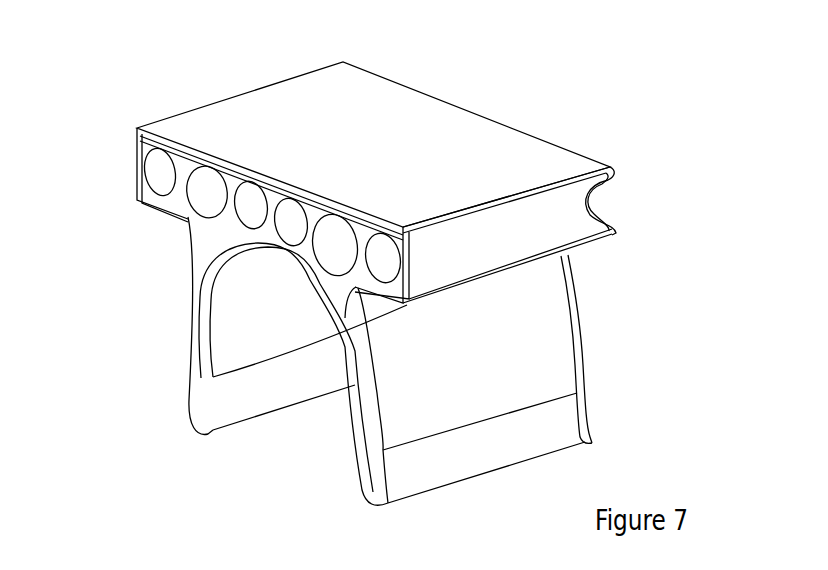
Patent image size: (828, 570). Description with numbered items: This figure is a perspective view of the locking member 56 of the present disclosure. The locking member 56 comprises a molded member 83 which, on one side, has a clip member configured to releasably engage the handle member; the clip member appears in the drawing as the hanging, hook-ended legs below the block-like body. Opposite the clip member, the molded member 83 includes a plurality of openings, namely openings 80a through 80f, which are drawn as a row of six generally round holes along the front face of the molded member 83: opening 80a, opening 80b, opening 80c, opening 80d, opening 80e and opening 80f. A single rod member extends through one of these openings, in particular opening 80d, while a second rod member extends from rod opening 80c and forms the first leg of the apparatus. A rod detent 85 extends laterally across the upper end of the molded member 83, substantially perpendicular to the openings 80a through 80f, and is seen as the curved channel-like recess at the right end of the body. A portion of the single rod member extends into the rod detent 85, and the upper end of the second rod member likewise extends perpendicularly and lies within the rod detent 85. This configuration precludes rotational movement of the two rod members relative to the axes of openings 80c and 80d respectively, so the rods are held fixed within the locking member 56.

The locking member 56 is at (259, 81).
The molded member 83 is at (480, 91).
The rod detent 85 is at (616, 198).
The opening 80a is at (154, 172).
The opening 80b is at (203, 200).
The rod opening 80c is at (252, 220).
The opening 80d is at (297, 237).
The opening 80e is at (337, 243).
The opening 80f is at (388, 268).